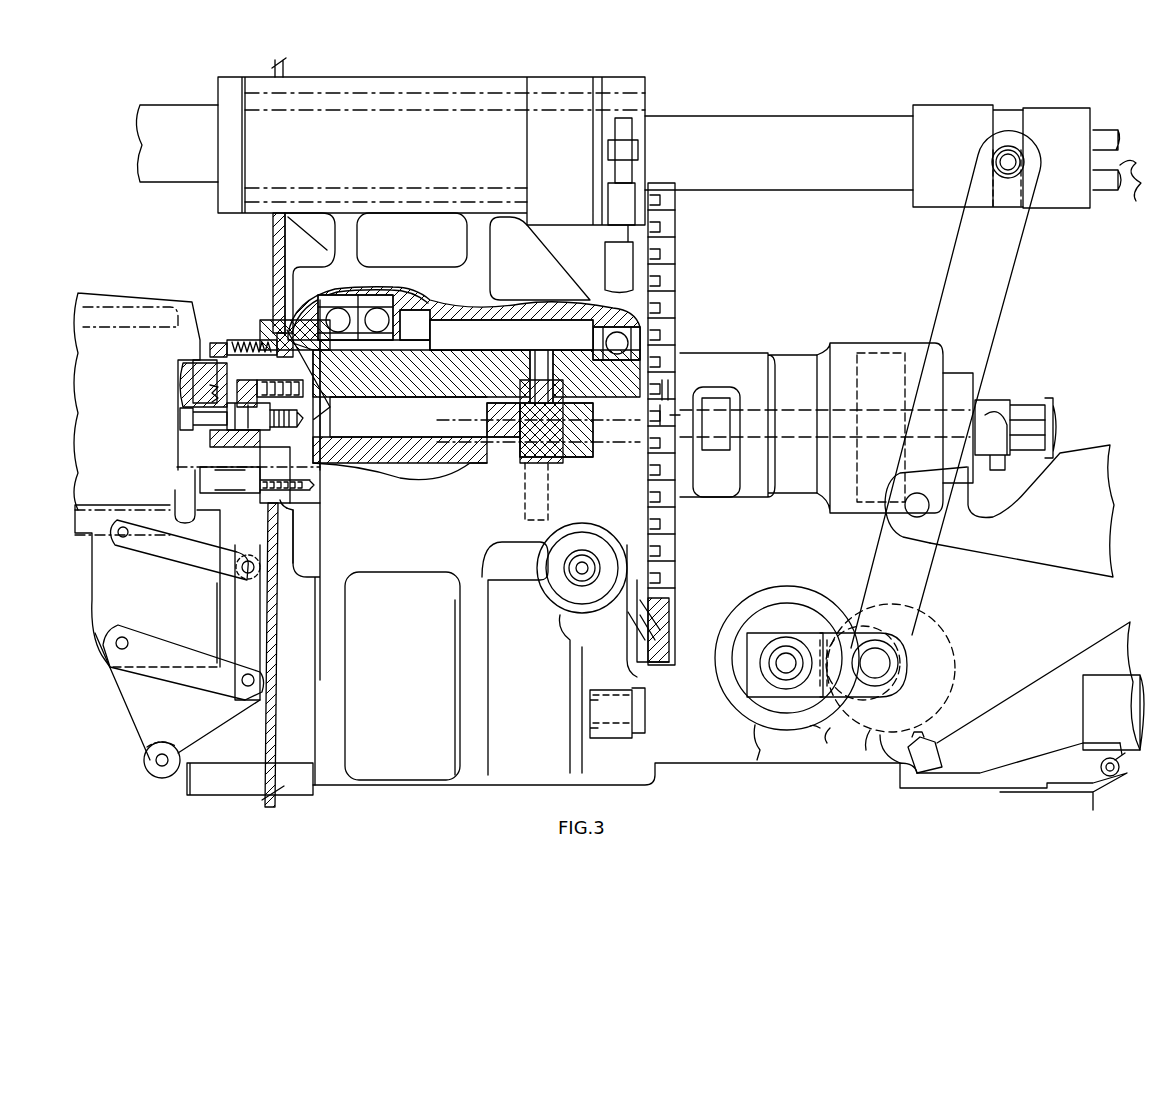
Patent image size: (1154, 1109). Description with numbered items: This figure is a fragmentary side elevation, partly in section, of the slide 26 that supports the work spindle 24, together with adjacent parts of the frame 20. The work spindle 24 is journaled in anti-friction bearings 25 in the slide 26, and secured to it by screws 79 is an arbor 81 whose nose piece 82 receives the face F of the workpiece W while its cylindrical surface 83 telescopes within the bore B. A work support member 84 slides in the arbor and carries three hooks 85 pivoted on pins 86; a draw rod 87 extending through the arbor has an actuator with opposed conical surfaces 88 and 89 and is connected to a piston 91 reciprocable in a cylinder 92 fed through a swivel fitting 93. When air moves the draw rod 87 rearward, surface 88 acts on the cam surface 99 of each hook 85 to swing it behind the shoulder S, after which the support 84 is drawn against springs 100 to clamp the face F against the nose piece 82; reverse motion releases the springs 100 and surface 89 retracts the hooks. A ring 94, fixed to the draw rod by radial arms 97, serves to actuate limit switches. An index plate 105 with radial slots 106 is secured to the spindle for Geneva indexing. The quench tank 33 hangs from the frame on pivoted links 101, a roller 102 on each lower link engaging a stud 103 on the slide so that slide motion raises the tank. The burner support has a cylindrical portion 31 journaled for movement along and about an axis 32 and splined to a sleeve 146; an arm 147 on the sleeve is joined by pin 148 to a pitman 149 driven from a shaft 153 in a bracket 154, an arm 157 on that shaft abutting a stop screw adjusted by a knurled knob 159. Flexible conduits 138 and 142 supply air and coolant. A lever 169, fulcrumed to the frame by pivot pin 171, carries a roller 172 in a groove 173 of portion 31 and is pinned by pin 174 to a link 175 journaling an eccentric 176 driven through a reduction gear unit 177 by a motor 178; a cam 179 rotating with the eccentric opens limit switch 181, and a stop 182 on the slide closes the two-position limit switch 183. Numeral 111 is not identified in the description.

The frame 20 is at (273, 628).
The work spindle 24 is at (267, 336).
The anti-friction bearings 25 is at (384, 312).
The slide 26 is at (422, 528).
The cylindrical portion (journal part) 31 is at (148, 176).
The axis 32 is at (728, 118).
The tank 33 is at (142, 600).
The screws 79 is at (310, 496).
The arbor 81 is at (370, 440).
The nose piece 82 is at (242, 330).
The cylindrical surface 83 is at (260, 367).
The work support member 84 is at (272, 446).
The hooks 85 is at (203, 375).
The pins 86 is at (203, 398).
The draw rod 87 is at (426, 472).
The conical surface 88 is at (220, 430).
The conical surface 89 is at (220, 440).
The piston 91 is at (890, 345).
The cylinder 92 is at (834, 342).
The swivel fitting 93 is at (1005, 412).
The ring 94 is at (520, 502).
The radial arms 97 is at (520, 357).
The cam surface 99 is at (210, 420).
The springs 100 is at (316, 397).
The pivoted links 101 is at (190, 558).
The roller 102 is at (150, 774).
The stud 103 is at (212, 774).
The index plate 105 is at (670, 516).
The radial slots 106 is at (660, 290).
The stop 111 is at (675, 214).
The flexible conduit 138 is at (1110, 134).
The flexible conduit 142 is at (1117, 189).
The sleeve 146 is at (563, 197).
The arm 147 is at (620, 238).
The pin 148 is at (640, 150).
The pitman 149 is at (636, 202).
The shaft 153 is at (626, 690).
The bracket 154 is at (542, 709).
The arm 157 is at (662, 600).
The knurled knob 159 is at (610, 566).
The lever 169 is at (985, 312).
The pivot pin 171 is at (918, 513).
The roller 172 is at (1020, 150).
The groove 173 is at (1002, 114).
The pin 174 is at (888, 663).
The link 175 is at (814, 688).
The eccentric 176 is at (798, 664).
The reduction gear unit 177 is at (774, 605).
The motor 178 is at (756, 586).
The cam 179 is at (757, 747).
The limit switch 181 is at (938, 743).
The stop 182 is at (1094, 774).
The two-position limit switch 183 is at (1120, 722).
The bore B is at (182, 378).
The face F is at (205, 353).
The shoulder S is at (176, 468).
The workpiece W is at (150, 294).